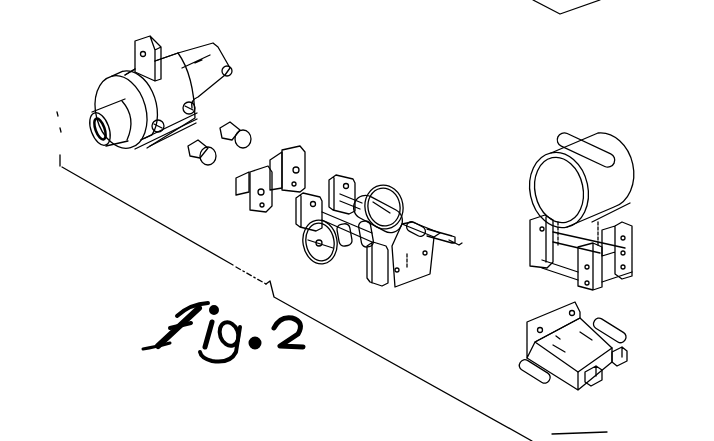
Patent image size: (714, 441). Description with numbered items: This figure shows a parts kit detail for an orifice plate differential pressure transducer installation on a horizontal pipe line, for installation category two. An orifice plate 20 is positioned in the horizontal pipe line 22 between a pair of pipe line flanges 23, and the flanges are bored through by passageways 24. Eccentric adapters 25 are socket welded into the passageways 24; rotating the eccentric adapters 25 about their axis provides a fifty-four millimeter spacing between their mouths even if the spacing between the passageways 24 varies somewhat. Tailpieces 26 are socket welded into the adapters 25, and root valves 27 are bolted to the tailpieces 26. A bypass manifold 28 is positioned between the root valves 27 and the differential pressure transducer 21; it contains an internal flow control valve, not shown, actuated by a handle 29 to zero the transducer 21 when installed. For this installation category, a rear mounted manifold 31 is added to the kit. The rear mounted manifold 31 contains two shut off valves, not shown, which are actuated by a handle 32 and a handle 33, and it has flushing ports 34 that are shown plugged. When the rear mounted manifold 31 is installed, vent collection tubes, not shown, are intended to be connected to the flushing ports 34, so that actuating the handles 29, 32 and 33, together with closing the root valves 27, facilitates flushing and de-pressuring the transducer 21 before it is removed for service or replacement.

The orifice plate 20 is at (133, 53).
The differential pressure transducer 21 is at (575, 130).
The horizontal pipe line 22 is at (235, 72).
The pipe line flanges 23 is at (175, 72).
The passageways 24 is at (198, 108).
The eccentric adapters 25 is at (240, 130).
The tailpieces 26 is at (298, 157).
The root valves 27 is at (360, 207).
The bypass manifold 28 is at (405, 240).
The handle 29 is at (443, 238).
The rear mounted manifold 31 is at (572, 375).
The handle 32 is at (527, 370).
The handle 33 is at (615, 326).
The flushing ports 34 is at (618, 364).